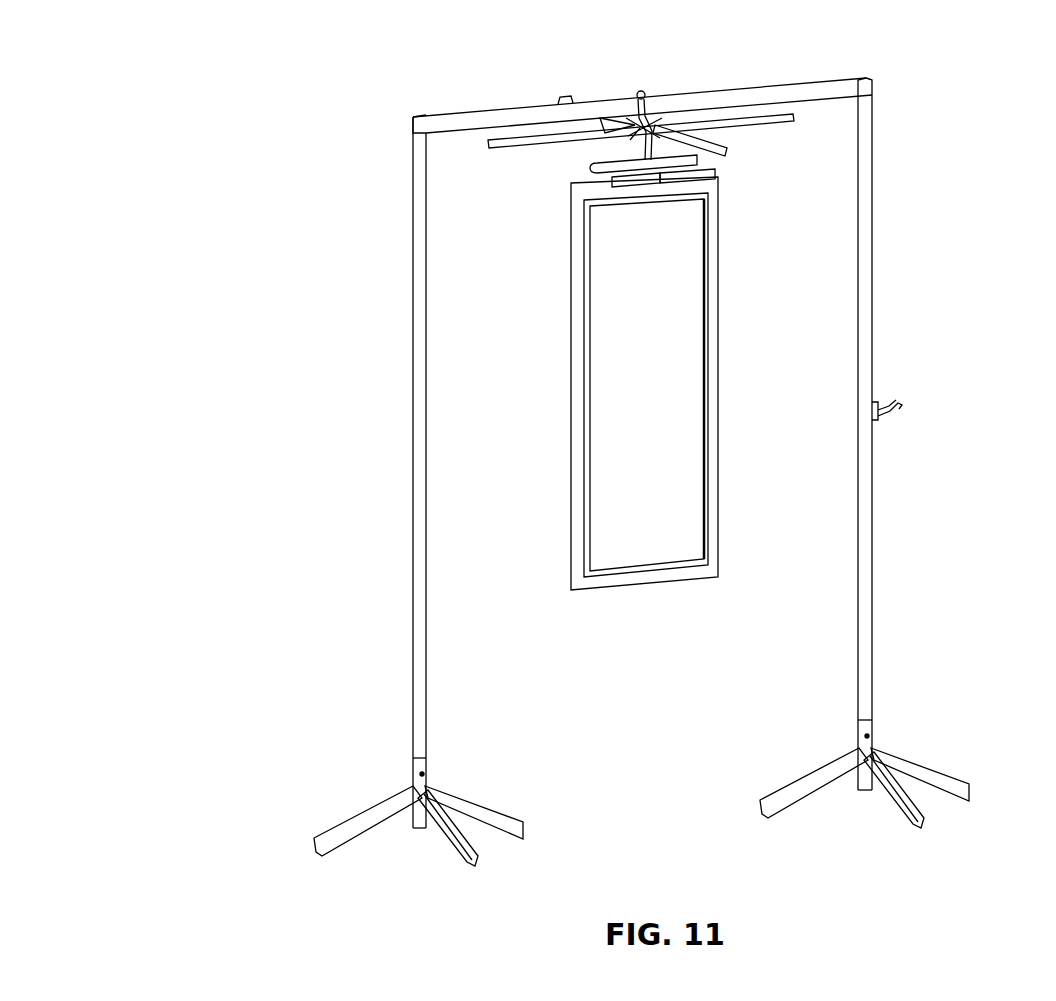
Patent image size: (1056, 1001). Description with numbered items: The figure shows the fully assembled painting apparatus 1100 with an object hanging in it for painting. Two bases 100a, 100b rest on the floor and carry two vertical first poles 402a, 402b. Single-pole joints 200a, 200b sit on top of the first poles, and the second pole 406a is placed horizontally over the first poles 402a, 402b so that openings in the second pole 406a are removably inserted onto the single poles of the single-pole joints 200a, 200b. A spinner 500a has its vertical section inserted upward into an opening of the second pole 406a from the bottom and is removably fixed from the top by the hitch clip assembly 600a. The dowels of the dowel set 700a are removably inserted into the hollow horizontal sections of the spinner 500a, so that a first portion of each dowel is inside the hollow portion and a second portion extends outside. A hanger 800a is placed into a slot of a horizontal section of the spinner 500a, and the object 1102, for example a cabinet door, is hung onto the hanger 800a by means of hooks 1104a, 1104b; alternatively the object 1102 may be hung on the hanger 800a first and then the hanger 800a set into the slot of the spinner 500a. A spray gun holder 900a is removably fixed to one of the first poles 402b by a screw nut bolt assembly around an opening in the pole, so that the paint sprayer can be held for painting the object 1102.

The painting apparatus 1100 is at (208, 238).
The base 100a is at (366, 812).
The base 100b is at (786, 792).
The single-pole joint 200a is at (424, 115).
The single-pole joint 200b is at (868, 78).
The first pole 402a is at (414, 650).
The first pole 402b is at (859, 645).
The second pole 406a is at (753, 90).
The spinner 500a is at (648, 124).
The hitch clip assembly 600a is at (638, 95).
The dowel set 700a is at (718, 131).
The hanger 800a is at (701, 160).
The spray gun holder 900a is at (895, 410).
The object 1102 is at (723, 424).
The hook 1104a is at (612, 176).
The hook 1104b is at (682, 171).